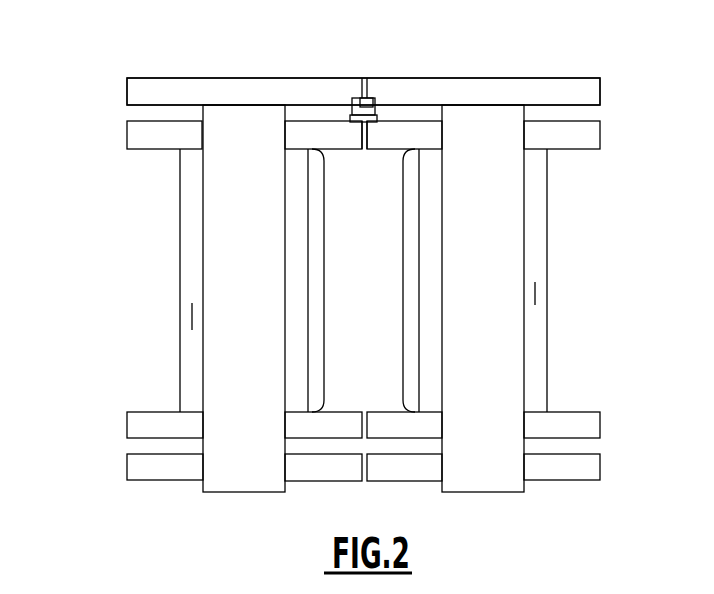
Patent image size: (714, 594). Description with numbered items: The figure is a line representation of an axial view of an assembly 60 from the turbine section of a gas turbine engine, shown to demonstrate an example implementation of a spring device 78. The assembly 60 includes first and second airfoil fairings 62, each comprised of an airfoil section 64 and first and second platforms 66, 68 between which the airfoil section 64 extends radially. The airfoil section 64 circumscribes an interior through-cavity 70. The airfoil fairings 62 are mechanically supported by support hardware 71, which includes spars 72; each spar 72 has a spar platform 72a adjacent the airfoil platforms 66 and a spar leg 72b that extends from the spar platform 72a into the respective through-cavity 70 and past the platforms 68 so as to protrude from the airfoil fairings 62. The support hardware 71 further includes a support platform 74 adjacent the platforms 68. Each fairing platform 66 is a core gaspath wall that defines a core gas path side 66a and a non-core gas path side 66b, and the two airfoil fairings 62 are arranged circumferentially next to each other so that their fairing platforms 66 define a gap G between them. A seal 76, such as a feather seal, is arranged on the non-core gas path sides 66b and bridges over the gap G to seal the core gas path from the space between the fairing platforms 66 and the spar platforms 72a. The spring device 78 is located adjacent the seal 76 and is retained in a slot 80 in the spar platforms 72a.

The assembly 60 is at (108, 337).
The airfoil fairing 62 is at (178, 385).
The airfoil section 64 is at (403, 280).
The first platform 66 is at (157, 138).
The core gas path side 66a is at (392, 150).
The non-core gas path side 66b is at (416, 121).
The second platform 68 is at (138, 425).
The through-cavity 70 is at (192, 303).
The support hardware 71 is at (120, 93).
The spar 72 is at (313, 78).
The spar platform 72a is at (220, 88).
The spar leg 72b is at (228, 244).
The support platform 74 is at (185, 468).
The seal 76 is at (380, 116).
The spring device 78 is at (355, 98).
The slot 80 is at (379, 107).
The gap G is at (362, 154).